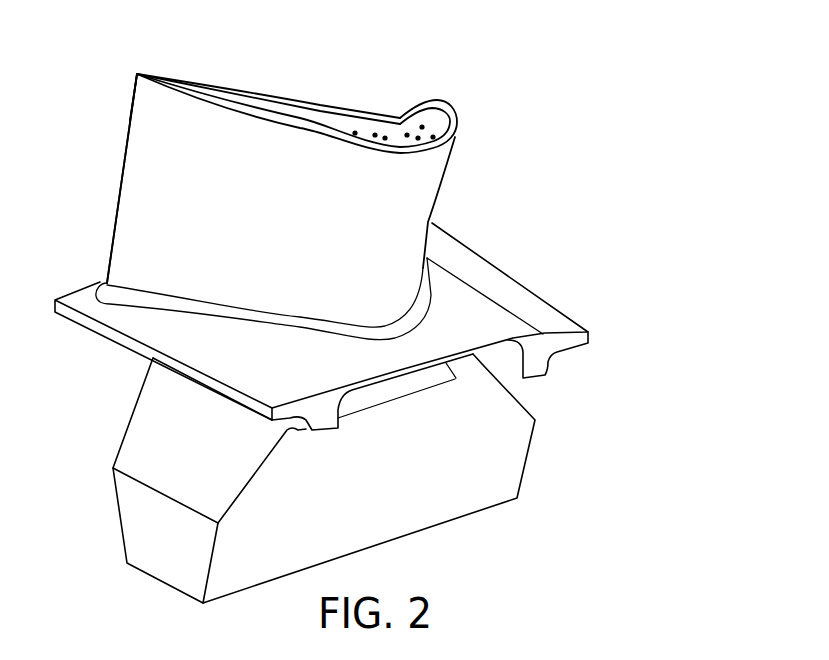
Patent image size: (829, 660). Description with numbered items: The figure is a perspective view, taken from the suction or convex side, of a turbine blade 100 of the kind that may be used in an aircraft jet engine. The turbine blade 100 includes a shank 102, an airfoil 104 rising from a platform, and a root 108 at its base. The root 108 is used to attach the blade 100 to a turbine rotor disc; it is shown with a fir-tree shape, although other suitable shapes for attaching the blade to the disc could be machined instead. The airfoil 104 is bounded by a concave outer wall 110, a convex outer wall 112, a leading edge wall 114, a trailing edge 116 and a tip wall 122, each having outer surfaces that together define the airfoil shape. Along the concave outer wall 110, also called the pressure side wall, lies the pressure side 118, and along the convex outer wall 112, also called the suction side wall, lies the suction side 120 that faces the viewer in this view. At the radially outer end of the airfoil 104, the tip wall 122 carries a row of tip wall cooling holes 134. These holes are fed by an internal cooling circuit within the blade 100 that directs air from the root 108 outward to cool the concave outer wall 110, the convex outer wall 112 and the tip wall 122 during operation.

The turbine blade 100 is at (578, 139).
The shank 102 is at (395, 385).
The airfoil 104 is at (353, 238).
The root 108 is at (152, 427).
The concave outer wall 110 is at (223, 88).
The convex outer wall 112 is at (268, 130).
The leading edge wall 114 is at (445, 98).
The trailing edge 116 is at (123, 157).
The pressure side 118 is at (343, 112).
The suction side 120 is at (166, 98).
The tip wall 122 is at (440, 123).
The tip wall cooling holes 134 is at (407, 137).